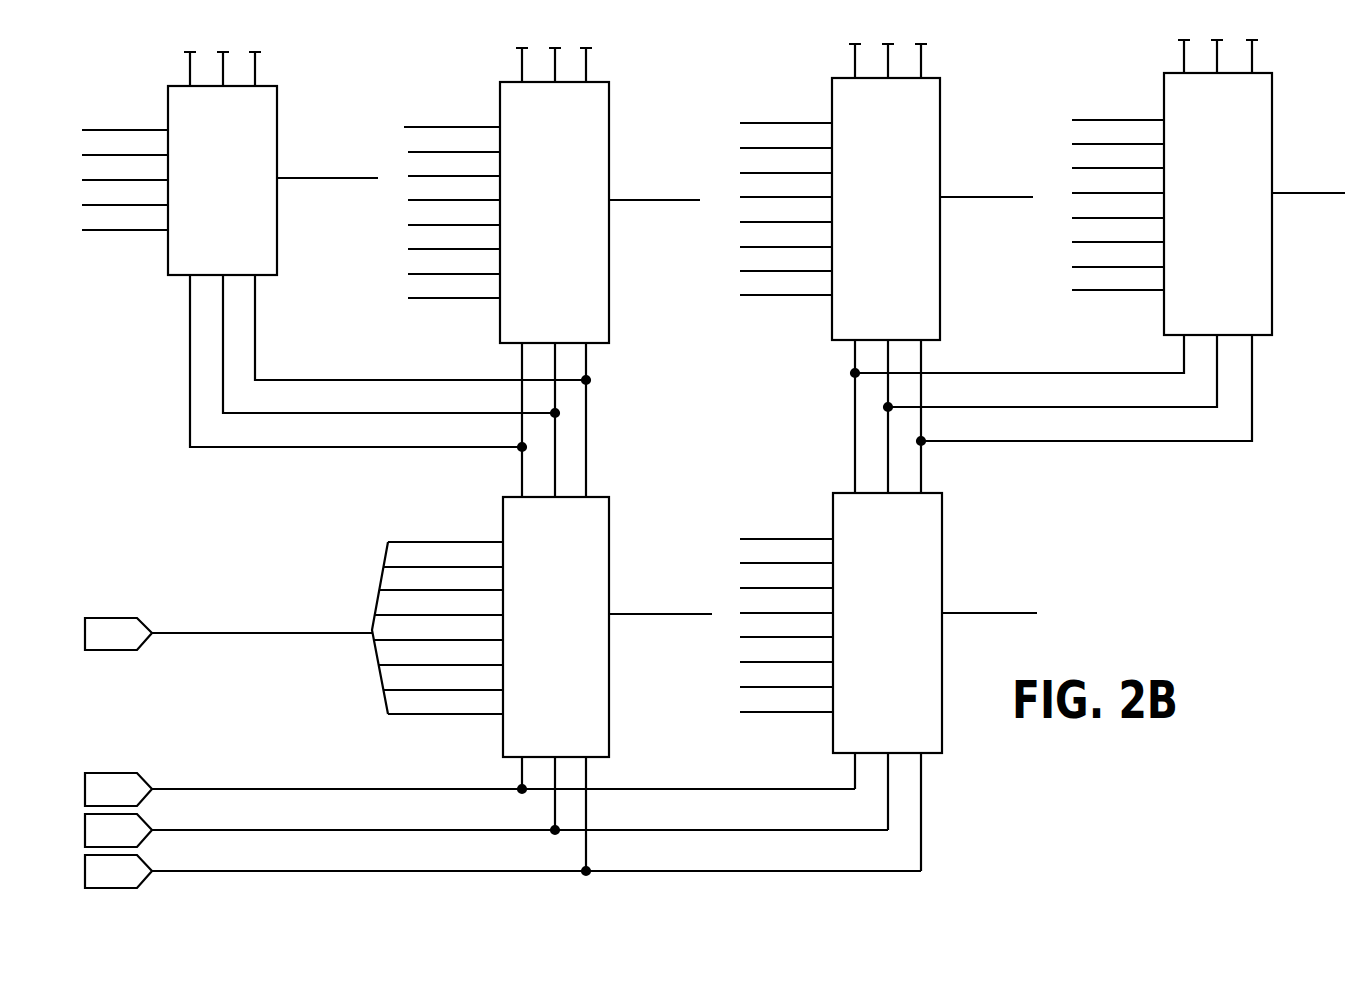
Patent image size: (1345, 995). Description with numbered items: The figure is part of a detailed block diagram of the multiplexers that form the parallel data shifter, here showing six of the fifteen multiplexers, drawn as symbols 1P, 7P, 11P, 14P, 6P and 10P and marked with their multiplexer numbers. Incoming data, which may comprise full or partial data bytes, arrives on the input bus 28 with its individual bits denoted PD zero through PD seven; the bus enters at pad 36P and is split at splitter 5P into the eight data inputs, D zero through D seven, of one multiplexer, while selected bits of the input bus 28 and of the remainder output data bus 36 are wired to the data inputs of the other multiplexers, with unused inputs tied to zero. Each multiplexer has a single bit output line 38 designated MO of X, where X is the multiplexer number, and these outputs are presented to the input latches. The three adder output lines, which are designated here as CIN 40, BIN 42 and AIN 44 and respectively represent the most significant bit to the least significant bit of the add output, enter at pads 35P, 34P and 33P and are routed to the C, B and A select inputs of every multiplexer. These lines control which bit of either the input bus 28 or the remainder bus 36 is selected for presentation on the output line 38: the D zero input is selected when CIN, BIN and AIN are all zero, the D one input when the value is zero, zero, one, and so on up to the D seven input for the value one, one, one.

The MUX51H multiplexer #12 1P is at (230, 163).
The MUX81 multiplexer #9 7P is at (554, 195).
The MUX81 multiplexer #5 11P is at (886, 192).
The MUX81 multiplexer #1 14P is at (1208, 187).
The MUX81 multiplexer #8 6P is at (607, 684).
The MUX81 multiplexer #4 10P is at (862, 682).
The bus splitter for PDIN 5P is at (431, 611).
The PDIN input pad 36P is at (118, 634).
The CIN input pad 35P is at (118, 789).
The BIN input pad 34P is at (118, 830).
The AIN input pad 33P is at (118, 871).
The input bus 28 is at (232, 634).
The remainder output data bus 36 is at (405, 115).
The single bit output line 38 is at (998, 614).
The CIN line 40 is at (312, 789).
The BIN line 42 is at (348, 830).
The AIN line 44 is at (388, 871).